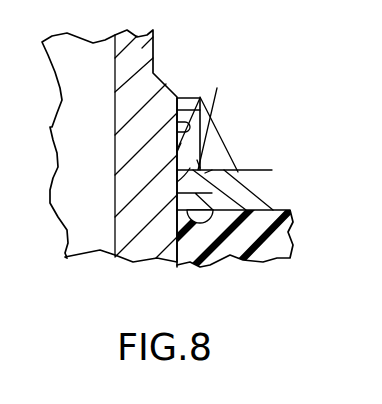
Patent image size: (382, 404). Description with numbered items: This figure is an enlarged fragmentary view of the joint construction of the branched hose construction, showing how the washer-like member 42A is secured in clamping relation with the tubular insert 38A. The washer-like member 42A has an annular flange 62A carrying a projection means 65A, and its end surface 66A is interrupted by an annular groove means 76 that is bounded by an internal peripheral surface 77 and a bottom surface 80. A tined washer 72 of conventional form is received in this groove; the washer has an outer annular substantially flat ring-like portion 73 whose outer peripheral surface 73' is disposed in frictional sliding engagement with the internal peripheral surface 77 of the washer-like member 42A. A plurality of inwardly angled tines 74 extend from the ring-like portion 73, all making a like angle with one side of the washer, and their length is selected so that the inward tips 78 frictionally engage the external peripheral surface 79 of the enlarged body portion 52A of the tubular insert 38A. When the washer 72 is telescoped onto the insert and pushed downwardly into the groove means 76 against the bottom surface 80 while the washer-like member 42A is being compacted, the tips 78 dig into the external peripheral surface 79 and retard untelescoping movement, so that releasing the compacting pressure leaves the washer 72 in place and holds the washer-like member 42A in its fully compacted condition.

The tubular insert 38A is at (151, 34).
The annular groove means 76 is at (186, 98).
The end surface 66A is at (200, 98).
The internal peripheral surface 77 is at (182, 113).
The external peripheral surface 79 is at (180, 124).
The inward tips 78 is at (177, 152).
The bottom surface 80 is at (177, 182).
The tines 74 is at (198, 150).
The outer annular ring-like portion 73 is at (247, 128).
The outer peripheral surface 73' is at (232, 137).
The tined washer 72 is at (205, 173).
The washer-like member 42A is at (206, 170).
The annular flange 62A is at (277, 192).
The enlarged body portion 52A is at (231, 252).
The projection means 65A is at (184, 258).